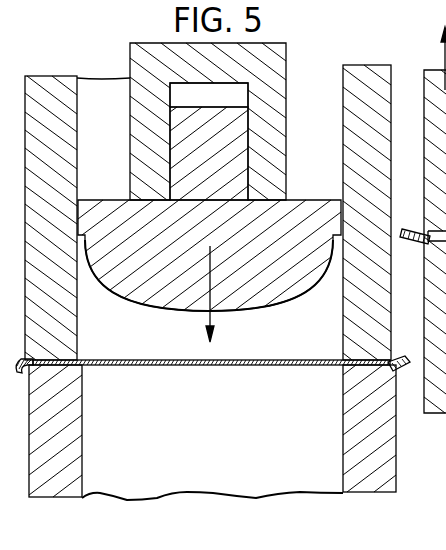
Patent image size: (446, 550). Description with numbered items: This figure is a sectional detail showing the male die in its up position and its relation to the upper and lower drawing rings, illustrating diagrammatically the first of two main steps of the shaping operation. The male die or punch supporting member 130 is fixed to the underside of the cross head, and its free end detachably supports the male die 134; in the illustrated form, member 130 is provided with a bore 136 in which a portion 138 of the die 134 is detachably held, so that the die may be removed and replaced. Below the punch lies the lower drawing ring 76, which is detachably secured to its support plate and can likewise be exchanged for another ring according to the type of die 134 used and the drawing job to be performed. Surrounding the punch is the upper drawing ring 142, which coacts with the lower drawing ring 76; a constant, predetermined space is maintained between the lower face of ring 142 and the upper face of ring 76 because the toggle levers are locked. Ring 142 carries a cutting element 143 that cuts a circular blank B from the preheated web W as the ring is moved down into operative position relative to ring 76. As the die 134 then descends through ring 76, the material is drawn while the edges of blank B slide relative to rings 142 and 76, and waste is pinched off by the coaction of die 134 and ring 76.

The lower drawing ring 76 is at (82, 456).
The male die or punch supporting member 130 is at (278, 77).
The male die 134 is at (157, 299).
The bore 136 is at (250, 94).
The portion of die 138 is at (248, 142).
The drawing ring 142 is at (90, 60).
The cutting element 143 is at (416, 232).
The circular blank B is at (213, 366).
The web W is at (405, 371).